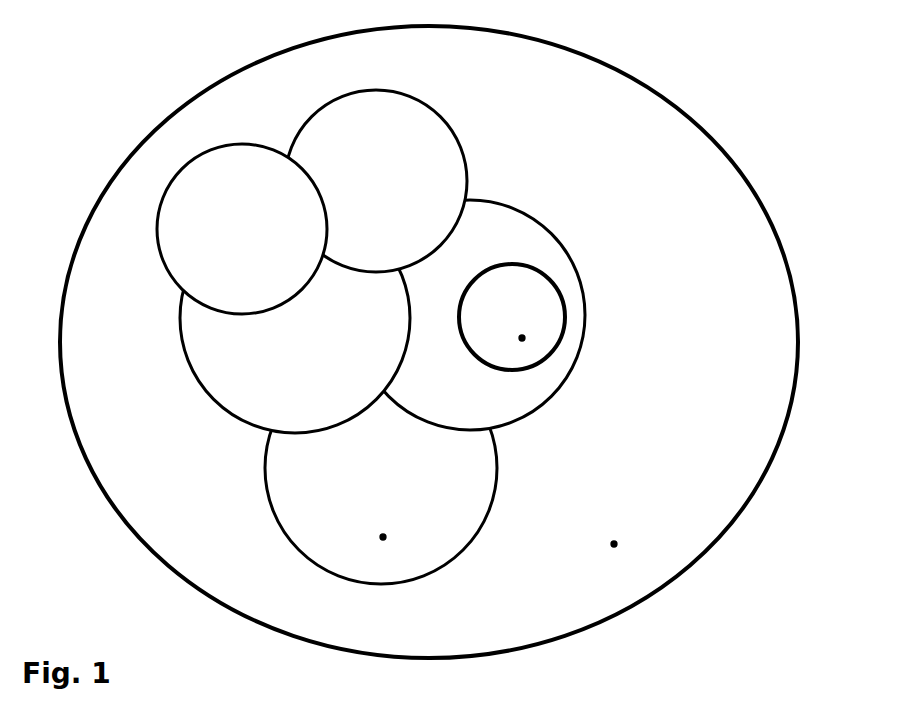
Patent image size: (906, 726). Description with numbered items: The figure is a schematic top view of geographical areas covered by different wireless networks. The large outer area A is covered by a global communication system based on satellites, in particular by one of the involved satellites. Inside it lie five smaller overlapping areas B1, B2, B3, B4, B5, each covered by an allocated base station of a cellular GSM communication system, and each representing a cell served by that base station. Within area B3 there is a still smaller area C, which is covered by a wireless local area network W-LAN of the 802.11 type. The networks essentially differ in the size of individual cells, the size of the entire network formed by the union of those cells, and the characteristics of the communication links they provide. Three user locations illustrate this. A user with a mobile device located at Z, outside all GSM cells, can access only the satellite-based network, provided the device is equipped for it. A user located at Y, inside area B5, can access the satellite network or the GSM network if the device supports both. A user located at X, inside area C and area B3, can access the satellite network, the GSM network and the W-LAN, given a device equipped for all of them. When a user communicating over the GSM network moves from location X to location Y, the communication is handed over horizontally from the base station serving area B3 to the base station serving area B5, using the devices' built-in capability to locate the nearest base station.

The area covered by satellite-based communication system A is at (748, 505).
The area covered by GSM base station B1 is at (267, 145).
The area covered by GSM base station B2 is at (400, 93).
The area covered by GSM base station B3 is at (507, 203).
The area covered by GSM base station B4 is at (205, 393).
The area covered by GSM base station B5 is at (497, 485).
The area covered by wireless local area network C is at (568, 255).
The location X is at (509, 339).
The location Y is at (370, 536).
The location Z is at (631, 538).